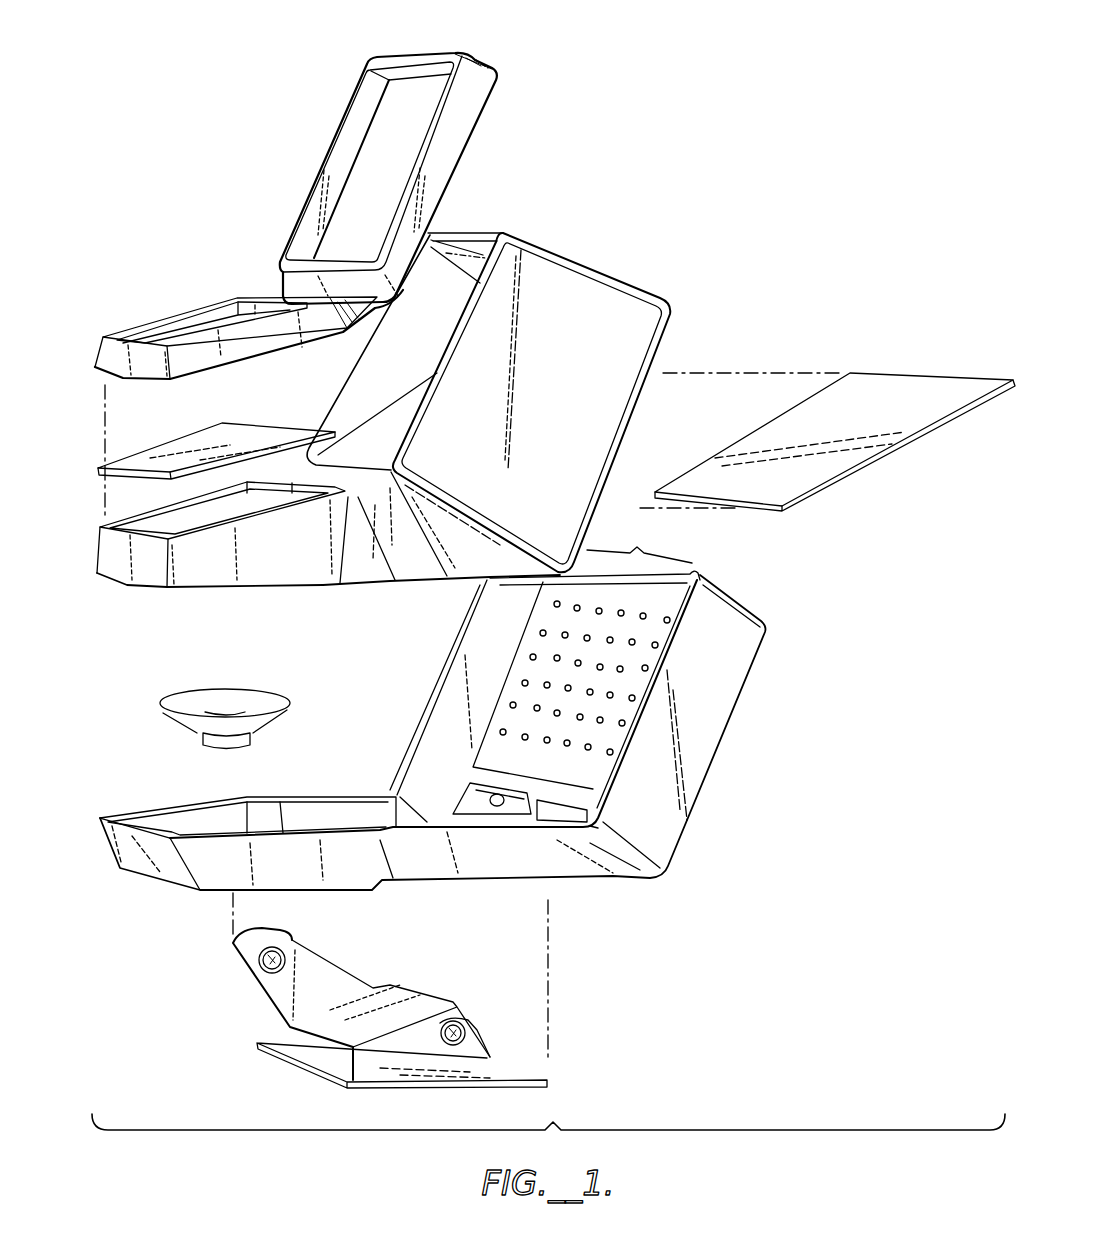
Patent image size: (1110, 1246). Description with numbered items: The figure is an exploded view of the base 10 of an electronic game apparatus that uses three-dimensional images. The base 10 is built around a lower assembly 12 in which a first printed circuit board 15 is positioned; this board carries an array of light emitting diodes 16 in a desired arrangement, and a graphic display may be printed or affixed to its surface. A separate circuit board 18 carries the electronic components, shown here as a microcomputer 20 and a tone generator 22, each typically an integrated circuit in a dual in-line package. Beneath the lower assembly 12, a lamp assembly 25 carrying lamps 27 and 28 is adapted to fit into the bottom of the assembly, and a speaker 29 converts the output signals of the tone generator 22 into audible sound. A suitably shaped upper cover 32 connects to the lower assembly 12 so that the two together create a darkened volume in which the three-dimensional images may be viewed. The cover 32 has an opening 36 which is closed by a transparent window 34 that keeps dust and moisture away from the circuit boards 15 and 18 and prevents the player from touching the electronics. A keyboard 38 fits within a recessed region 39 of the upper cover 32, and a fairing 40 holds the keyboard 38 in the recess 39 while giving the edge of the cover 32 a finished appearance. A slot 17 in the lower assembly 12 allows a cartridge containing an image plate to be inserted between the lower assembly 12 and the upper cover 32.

The base 10 is at (750, 897).
The lower assembly 12 is at (697, 772).
The first printed circuit board 15 is at (633, 687).
The light emitting diodes 16 is at (670, 620).
The slot 17 is at (639, 542).
The circuit board 18 is at (592, 800).
The microcomputer 20 is at (517, 803).
The tone generator 22 is at (596, 828).
The lamp assembly 25 is at (507, 1072).
The lamp 27 is at (467, 1025).
The lamp 28 is at (287, 953).
The speaker 29 is at (163, 702).
The upper cover 32 is at (607, 293).
The transparent window 34 is at (870, 387).
The opening 36 is at (440, 292).
The keyboard 38 is at (160, 452).
The recessed region 39 is at (160, 518).
The fairing 40 is at (457, 117).